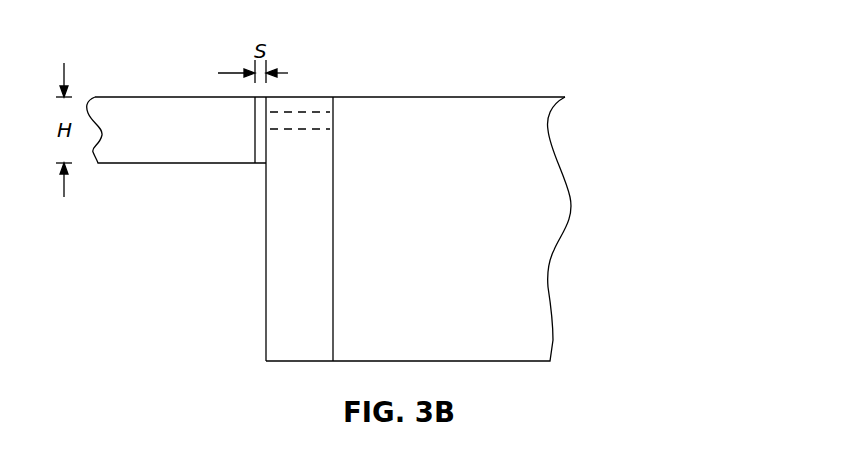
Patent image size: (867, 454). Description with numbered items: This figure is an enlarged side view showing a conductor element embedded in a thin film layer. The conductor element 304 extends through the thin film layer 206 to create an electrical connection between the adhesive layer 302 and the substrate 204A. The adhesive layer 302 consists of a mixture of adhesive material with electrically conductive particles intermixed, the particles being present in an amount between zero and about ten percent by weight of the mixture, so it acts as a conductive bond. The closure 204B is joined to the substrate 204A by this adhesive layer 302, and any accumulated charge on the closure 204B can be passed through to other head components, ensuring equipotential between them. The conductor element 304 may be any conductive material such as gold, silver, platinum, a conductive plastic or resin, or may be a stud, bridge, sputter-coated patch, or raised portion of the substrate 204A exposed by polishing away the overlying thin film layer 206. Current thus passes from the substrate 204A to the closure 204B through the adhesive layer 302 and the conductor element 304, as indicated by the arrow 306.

The substrate 204A is at (548, 287).
The closure 204B is at (130, 163).
The thin film layer 206 is at (265, 303).
The adhesive layer 302 is at (262, 167).
The conductor element 304 is at (307, 120).
The assembly indicated by arrow 306 is at (600, 128).